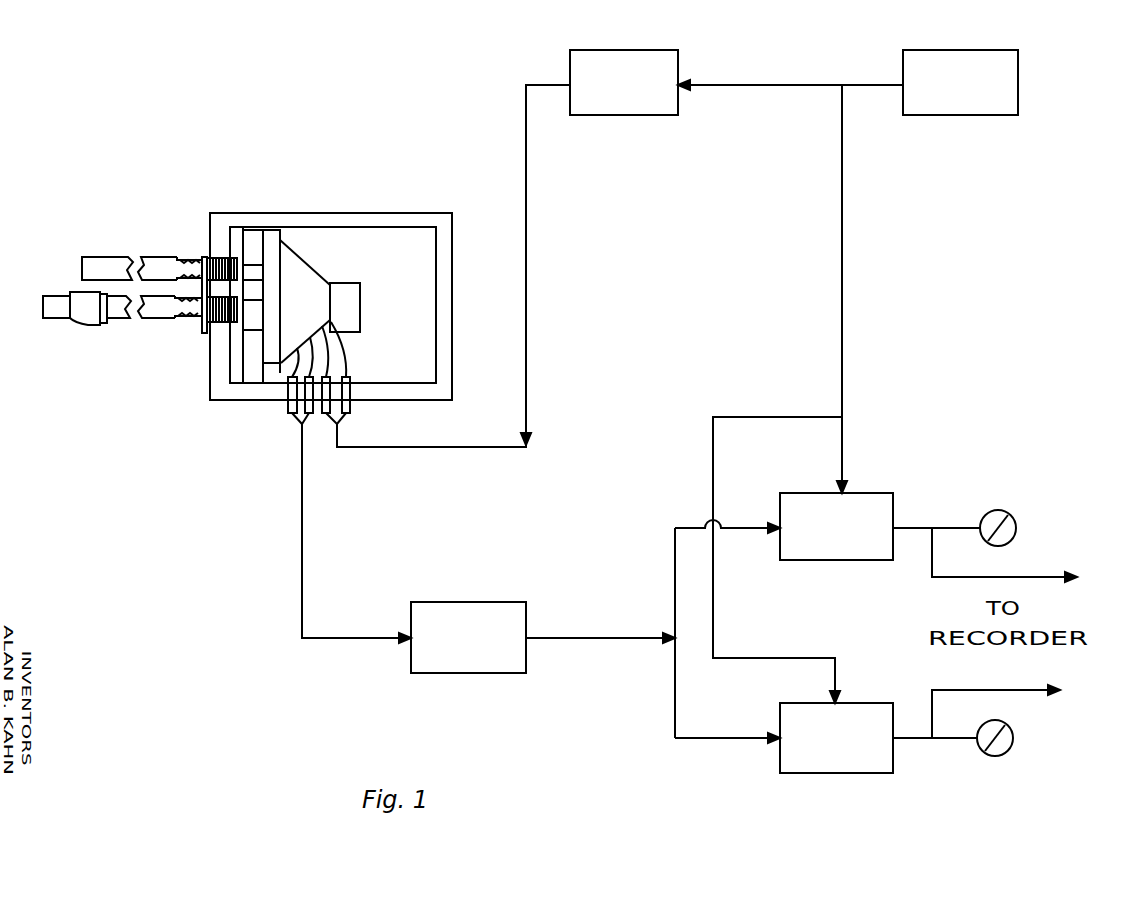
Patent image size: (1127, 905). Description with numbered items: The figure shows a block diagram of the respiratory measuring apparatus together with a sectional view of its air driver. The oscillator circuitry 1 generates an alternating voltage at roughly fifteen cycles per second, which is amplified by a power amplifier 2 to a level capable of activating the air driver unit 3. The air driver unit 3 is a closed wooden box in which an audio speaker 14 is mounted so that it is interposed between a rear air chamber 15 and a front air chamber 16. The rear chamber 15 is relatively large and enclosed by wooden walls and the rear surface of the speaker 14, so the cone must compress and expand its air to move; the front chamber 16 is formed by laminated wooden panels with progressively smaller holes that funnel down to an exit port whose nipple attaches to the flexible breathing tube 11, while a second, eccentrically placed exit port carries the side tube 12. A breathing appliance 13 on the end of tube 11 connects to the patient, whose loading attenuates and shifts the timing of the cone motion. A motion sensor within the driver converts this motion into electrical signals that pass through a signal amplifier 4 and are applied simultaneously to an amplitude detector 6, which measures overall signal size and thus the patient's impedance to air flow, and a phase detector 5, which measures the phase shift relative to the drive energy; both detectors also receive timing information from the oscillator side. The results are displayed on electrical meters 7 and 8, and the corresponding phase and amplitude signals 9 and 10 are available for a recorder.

The oscillator circuitry 1 is at (962, 115).
The power amplifier 2 is at (643, 115).
The air driver unit 3 is at (452, 300).
The signal amplifier 4 is at (461, 673).
The phase detector 5 is at (823, 773).
The amplitude detector 6 is at (825, 560).
The electrical meter 7 is at (1010, 513).
The electrical meter 8 is at (1010, 728).
The phase information signal output 9 is at (1005, 706).
The amplitude information signal output 10 is at (1016, 555).
The flexible polyvinyl chloride tube 11 is at (133, 320).
The flexible polyvinyl chloride tube 12 is at (115, 255).
The breathing appliance 13 is at (52, 318).
The audio speaker 14 is at (307, 267).
The rear air chamber 15 is at (369, 307).
The front air chamber 16 is at (258, 312).